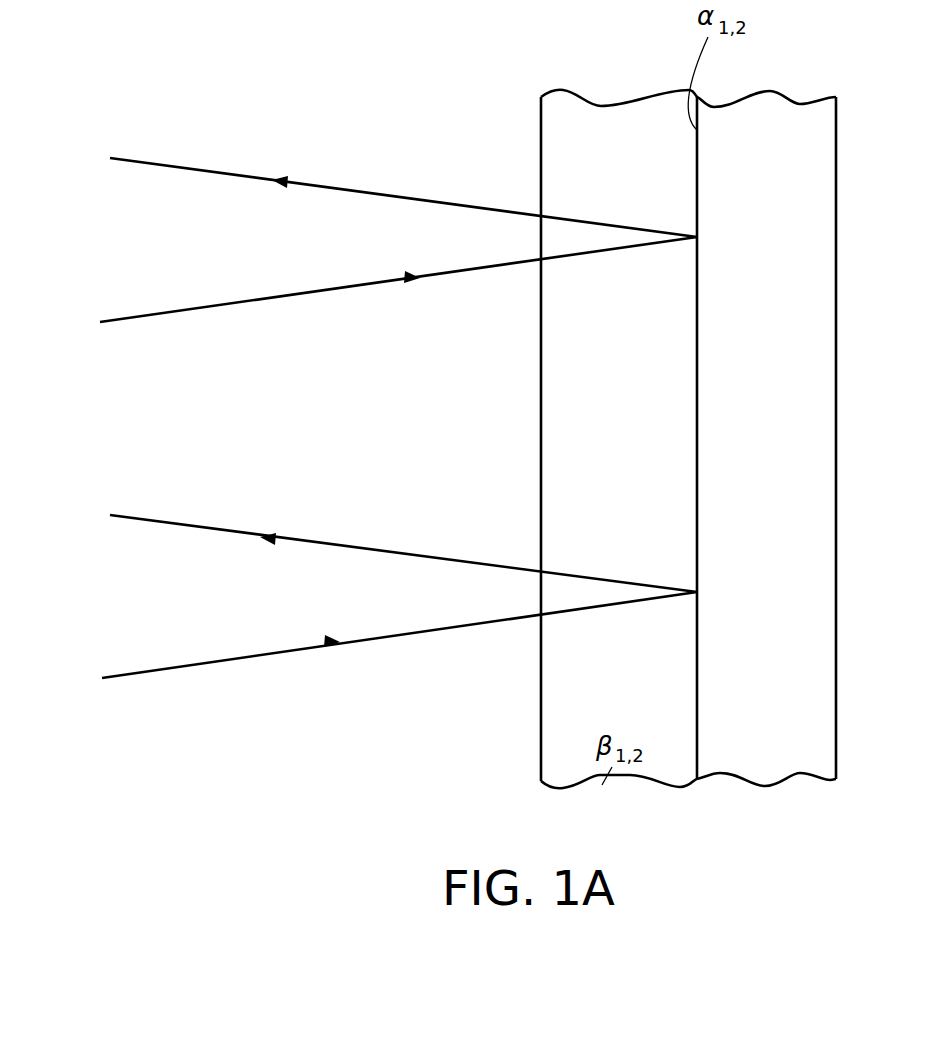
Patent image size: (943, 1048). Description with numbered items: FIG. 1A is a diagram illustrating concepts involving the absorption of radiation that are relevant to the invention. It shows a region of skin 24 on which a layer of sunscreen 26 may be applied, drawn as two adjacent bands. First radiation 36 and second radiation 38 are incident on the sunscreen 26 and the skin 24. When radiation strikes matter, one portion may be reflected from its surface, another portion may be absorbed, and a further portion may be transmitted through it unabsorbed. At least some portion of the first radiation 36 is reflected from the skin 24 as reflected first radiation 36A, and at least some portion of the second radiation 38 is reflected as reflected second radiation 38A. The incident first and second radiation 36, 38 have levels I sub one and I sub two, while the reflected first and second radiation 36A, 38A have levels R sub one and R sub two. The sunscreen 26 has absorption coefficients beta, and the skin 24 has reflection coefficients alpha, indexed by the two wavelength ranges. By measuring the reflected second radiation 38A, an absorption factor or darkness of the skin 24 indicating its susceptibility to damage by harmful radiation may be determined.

The skin 24 is at (785, 109).
The sunscreen 26 is at (606, 108).
The first radiation 36 is at (167, 313).
The reflected first radiation 36A is at (167, 162).
The second radiation 38 is at (170, 668).
The reflected second radiation 38A is at (170, 520).